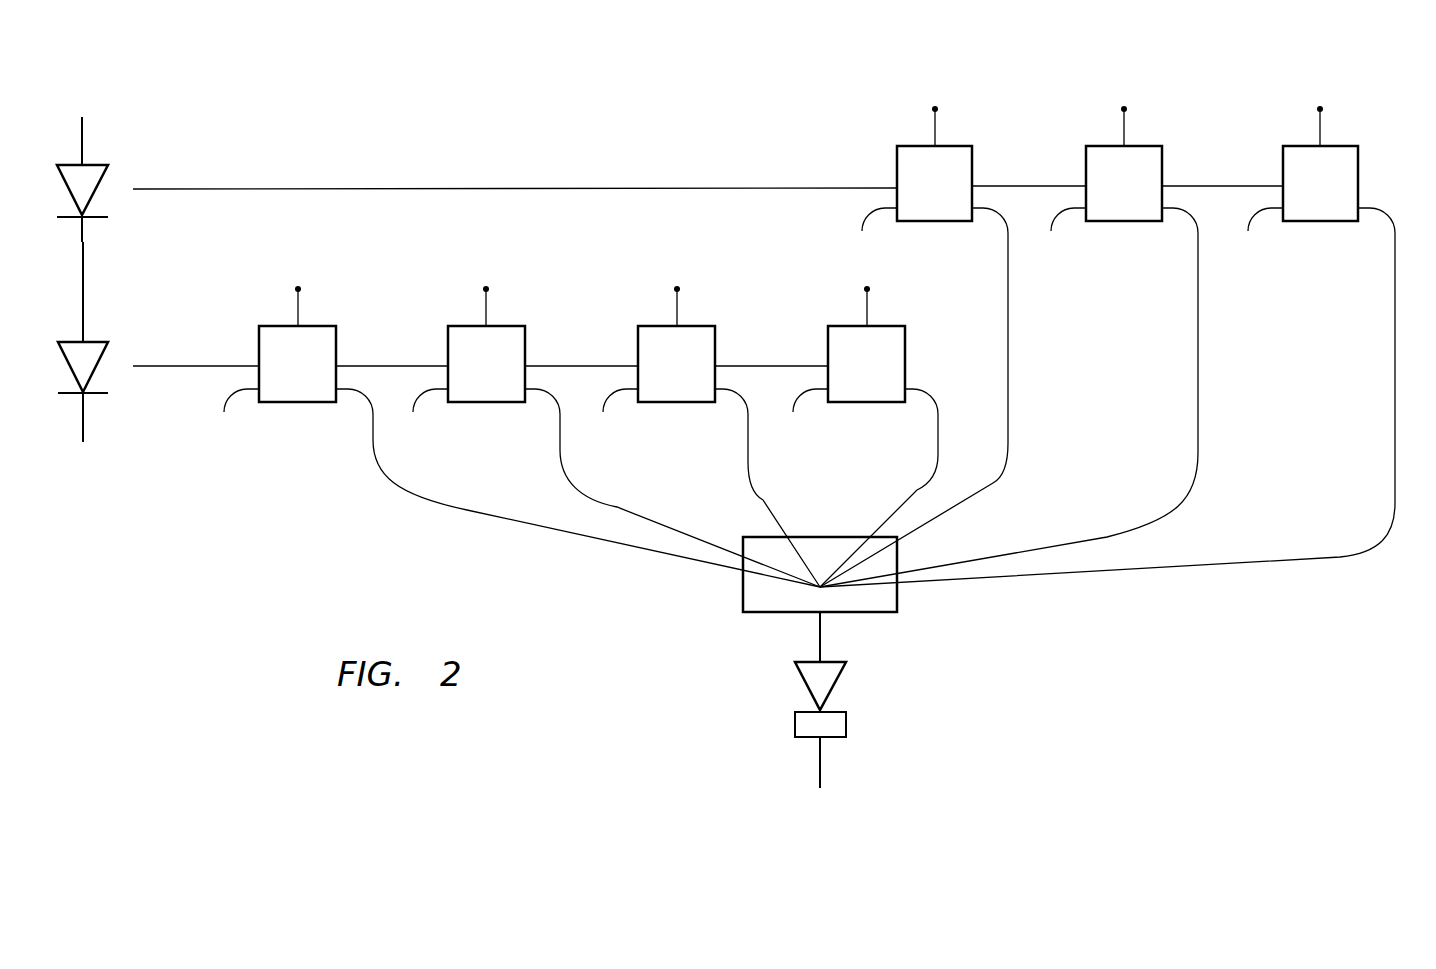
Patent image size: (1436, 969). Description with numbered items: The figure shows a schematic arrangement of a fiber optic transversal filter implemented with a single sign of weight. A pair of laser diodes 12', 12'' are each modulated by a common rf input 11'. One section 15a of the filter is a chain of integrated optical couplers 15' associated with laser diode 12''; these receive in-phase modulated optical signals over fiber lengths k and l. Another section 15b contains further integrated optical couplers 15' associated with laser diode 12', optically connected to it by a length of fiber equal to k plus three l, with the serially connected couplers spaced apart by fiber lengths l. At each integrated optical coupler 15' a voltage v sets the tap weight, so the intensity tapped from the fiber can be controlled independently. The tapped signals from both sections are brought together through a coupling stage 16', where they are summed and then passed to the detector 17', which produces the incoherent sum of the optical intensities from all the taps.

The rf input 11' is at (123, 257).
The laser diode 12' is at (515, 167).
The laser diode 12'' is at (196, 343).
The integrated optical coupler 15' is at (790, 305).
The section of integrated optical couplers 15a is at (283, 438).
The section of the filter 15b is at (1191, 64).
The coupling stage 16' is at (792, 574).
The detector 17' is at (794, 700).